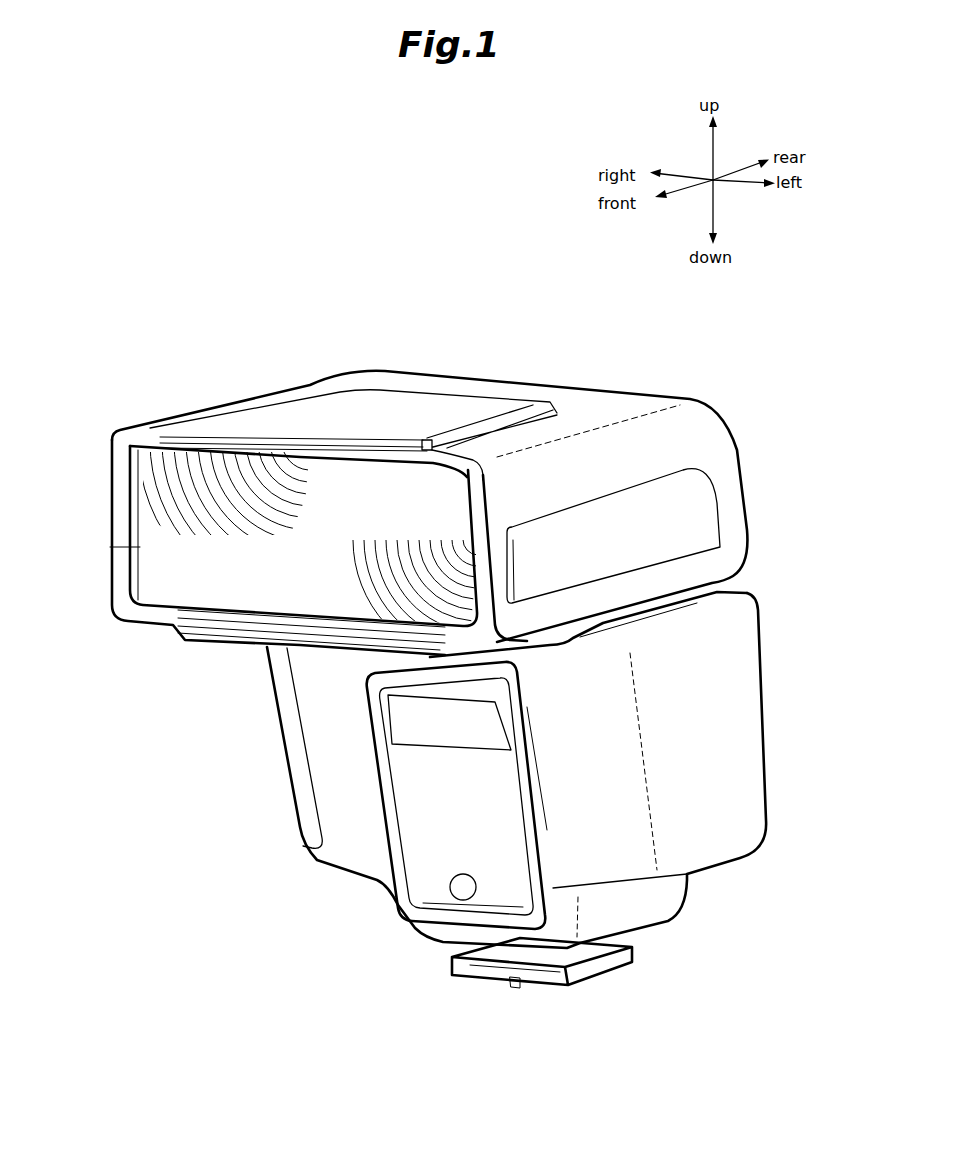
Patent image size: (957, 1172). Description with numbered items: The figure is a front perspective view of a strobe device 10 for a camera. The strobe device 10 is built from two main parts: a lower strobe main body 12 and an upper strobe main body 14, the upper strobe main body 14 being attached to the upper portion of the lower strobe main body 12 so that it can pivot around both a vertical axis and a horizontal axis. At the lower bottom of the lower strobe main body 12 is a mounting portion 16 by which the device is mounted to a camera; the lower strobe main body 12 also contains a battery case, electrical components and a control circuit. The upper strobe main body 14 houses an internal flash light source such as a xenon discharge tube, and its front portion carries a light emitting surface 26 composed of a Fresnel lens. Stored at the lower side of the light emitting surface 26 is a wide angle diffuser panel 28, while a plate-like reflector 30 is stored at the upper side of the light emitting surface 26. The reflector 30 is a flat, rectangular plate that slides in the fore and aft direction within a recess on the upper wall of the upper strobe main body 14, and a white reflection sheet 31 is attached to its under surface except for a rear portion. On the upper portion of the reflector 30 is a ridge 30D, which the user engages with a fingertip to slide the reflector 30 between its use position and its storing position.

The strobe device 10 is at (814, 485).
The lower strobe main body 12 is at (770, 677).
The upper strobe main body 14 is at (716, 421).
The mounting portion 16 is at (497, 967).
The light emitting surface 26 is at (133, 472).
The wide angle diffuser panel 28 is at (240, 617).
The reflector 30 is at (243, 411).
The ridge 30D is at (403, 393).
The white reflection sheet 31 is at (327, 435).